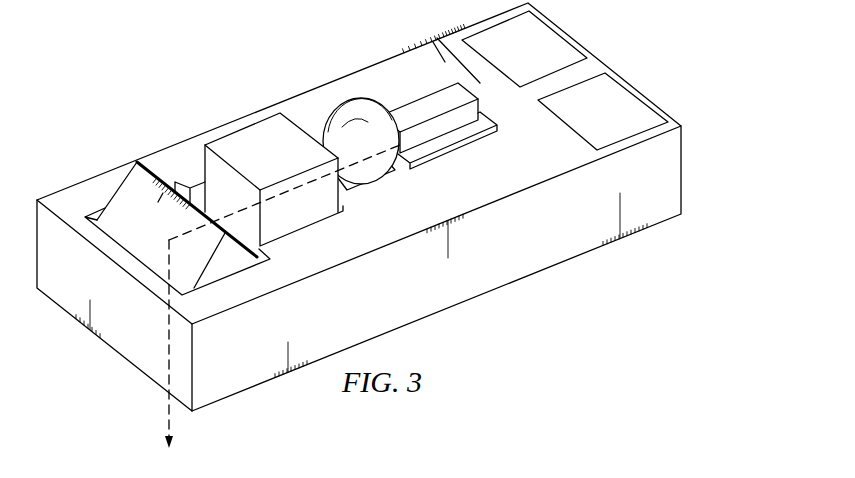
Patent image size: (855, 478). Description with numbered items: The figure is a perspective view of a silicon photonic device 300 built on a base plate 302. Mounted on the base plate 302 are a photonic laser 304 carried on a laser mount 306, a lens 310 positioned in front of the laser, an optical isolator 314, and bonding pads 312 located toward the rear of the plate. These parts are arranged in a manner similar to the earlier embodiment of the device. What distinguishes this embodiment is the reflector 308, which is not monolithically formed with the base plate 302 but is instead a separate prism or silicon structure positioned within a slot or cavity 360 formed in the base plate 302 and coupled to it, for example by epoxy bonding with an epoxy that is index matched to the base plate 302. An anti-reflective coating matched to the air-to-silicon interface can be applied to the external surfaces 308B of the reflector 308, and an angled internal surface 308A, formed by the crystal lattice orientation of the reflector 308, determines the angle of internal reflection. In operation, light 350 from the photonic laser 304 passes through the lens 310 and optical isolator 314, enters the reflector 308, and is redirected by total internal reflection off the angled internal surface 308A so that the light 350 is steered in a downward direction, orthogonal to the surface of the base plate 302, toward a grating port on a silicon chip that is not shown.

The silicon photonic device 300 is at (88, 19).
The base plate 302 is at (667, 173).
The photonic laser 304 is at (441, 105).
The laser mount 306 is at (460, 146).
The reflector 308 is at (172, 212).
The angled internal surface 308A is at (133, 190).
The external surfaces 308B is at (153, 188).
The lens 310 is at (346, 106).
The bonding pads 312 is at (543, 40).
The optical isolator 314 is at (276, 128).
The light 350 is at (303, 185).
The cavity 360 is at (250, 267).